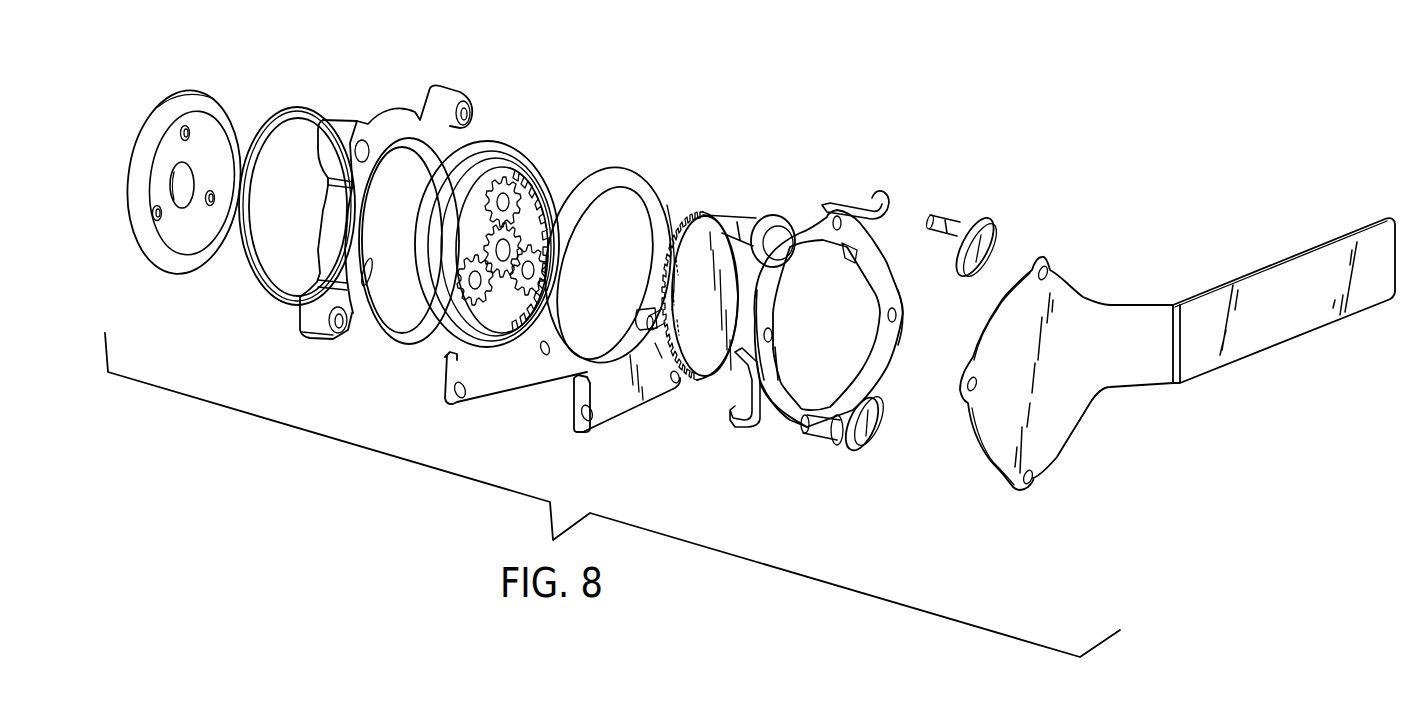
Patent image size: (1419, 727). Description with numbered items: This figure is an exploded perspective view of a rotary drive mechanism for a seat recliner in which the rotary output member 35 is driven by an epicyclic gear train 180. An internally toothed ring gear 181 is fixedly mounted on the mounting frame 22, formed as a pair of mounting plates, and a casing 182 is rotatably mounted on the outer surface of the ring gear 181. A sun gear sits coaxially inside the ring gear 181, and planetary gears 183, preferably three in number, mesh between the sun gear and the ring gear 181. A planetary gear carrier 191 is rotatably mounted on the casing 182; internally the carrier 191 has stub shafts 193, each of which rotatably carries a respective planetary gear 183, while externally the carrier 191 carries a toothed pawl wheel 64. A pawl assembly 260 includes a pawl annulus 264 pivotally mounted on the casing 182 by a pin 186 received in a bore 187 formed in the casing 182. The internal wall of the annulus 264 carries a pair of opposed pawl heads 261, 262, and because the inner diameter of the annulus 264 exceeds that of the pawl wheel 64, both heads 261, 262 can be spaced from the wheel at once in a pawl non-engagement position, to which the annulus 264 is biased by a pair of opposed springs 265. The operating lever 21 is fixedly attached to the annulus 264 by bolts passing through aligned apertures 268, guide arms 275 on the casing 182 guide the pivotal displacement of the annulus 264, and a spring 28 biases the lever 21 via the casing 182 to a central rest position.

The operating lever 21 is at (1293, 263).
The mounting frame 22 is at (441, 409).
The spring 28 is at (291, 100).
The rotary output member 35 is at (492, 292).
The toothed pawl wheel 64 is at (706, 232).
The epicyclic gear train 180 is at (448, 243).
The internally toothed ring gear 181 is at (502, 172).
The casing 182 is at (317, 297).
The planetary gears 183 is at (524, 282).
The pin 186 is at (744, 222).
The bore 187 is at (358, 146).
The planetary gear carrier 191 is at (721, 313).
The stub shafts 193 is at (648, 330).
The pawl assembly 260 is at (867, 307).
The pawl head 261 is at (780, 376).
The pawl head 262 is at (848, 258).
The pawl annulus 264 is at (779, 422).
The springs 265 is at (890, 210).
The apertures 268 is at (826, 218).
The guide arms 275 is at (863, 437).